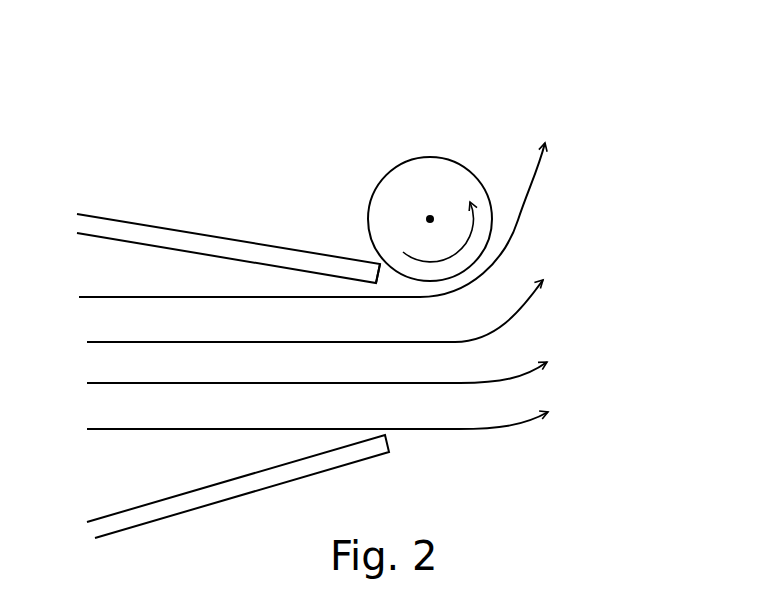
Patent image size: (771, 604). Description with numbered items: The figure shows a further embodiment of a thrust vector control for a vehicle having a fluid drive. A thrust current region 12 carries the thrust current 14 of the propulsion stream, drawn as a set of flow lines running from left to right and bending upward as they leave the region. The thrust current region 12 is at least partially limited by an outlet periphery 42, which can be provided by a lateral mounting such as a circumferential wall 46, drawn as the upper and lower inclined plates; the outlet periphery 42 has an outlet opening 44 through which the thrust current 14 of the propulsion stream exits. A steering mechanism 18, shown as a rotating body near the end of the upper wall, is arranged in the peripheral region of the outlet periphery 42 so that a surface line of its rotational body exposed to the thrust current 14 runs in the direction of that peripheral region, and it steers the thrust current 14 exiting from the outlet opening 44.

The thrust current region 12 is at (42, 366).
The thrust current 14 is at (623, 265).
The steering mechanism 18 is at (420, 137).
The outlet periphery 42 is at (363, 258).
The outlet opening 44 is at (387, 328).
The circumferential wall 46 is at (143, 238).